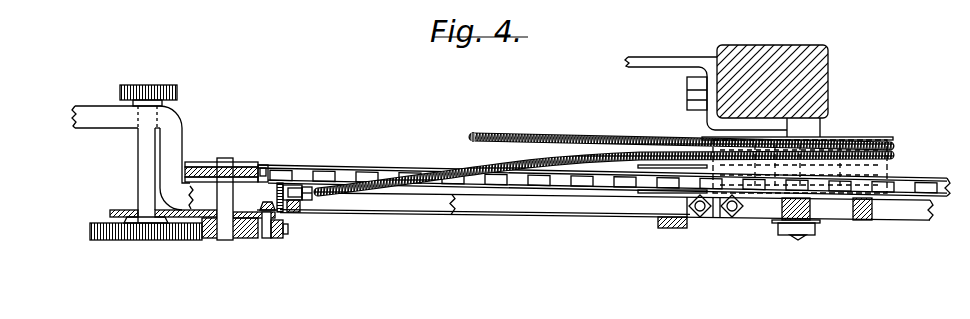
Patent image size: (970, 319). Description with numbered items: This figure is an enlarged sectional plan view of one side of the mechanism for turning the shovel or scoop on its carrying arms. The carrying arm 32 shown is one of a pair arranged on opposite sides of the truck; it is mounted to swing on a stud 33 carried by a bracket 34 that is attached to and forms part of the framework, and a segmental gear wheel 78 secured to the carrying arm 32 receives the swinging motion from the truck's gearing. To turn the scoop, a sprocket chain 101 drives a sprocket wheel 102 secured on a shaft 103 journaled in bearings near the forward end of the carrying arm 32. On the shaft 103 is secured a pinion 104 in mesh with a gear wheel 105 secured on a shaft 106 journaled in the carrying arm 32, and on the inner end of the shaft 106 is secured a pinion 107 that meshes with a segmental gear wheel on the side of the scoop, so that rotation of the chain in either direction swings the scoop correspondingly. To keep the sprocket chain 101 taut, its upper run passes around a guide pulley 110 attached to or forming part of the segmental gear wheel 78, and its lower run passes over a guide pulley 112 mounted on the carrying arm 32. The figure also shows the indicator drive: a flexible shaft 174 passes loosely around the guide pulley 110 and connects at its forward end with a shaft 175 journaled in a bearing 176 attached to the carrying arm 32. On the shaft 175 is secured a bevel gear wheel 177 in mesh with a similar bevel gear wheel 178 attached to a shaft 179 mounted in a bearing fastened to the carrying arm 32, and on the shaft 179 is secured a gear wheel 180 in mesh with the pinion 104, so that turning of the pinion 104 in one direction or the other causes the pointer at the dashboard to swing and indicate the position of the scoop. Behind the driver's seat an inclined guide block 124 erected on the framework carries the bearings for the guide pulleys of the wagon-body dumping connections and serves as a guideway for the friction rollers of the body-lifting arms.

The carrying arm 32 is at (97, 112).
The pinion 107 is at (177, 93).
The shaft 106 is at (140, 173).
The gear wheel 105 is at (143, 238).
The pinion 104 is at (237, 238).
The shaft 103 is at (225, 163).
The shaft 179 is at (266, 238).
The gear wheel 180 is at (285, 235).
The sprocket wheel 102 is at (258, 160).
The bevel gear wheel 178 is at (261, 206).
The bevel gear wheel 177 is at (280, 183).
The bearing 176 is at (300, 185).
The shaft 175 is at (297, 203).
The sprocket chain 101 is at (387, 175).
The flexible shaft 174 is at (518, 142).
The guide pulley 112 is at (655, 193).
The guide pulley 110 is at (872, 167).
The inclined guide block 124 is at (828, 77).
The bracket 34 is at (677, 62).
The segmental gear wheel 78 is at (922, 212).
The stud 33 is at (798, 240).